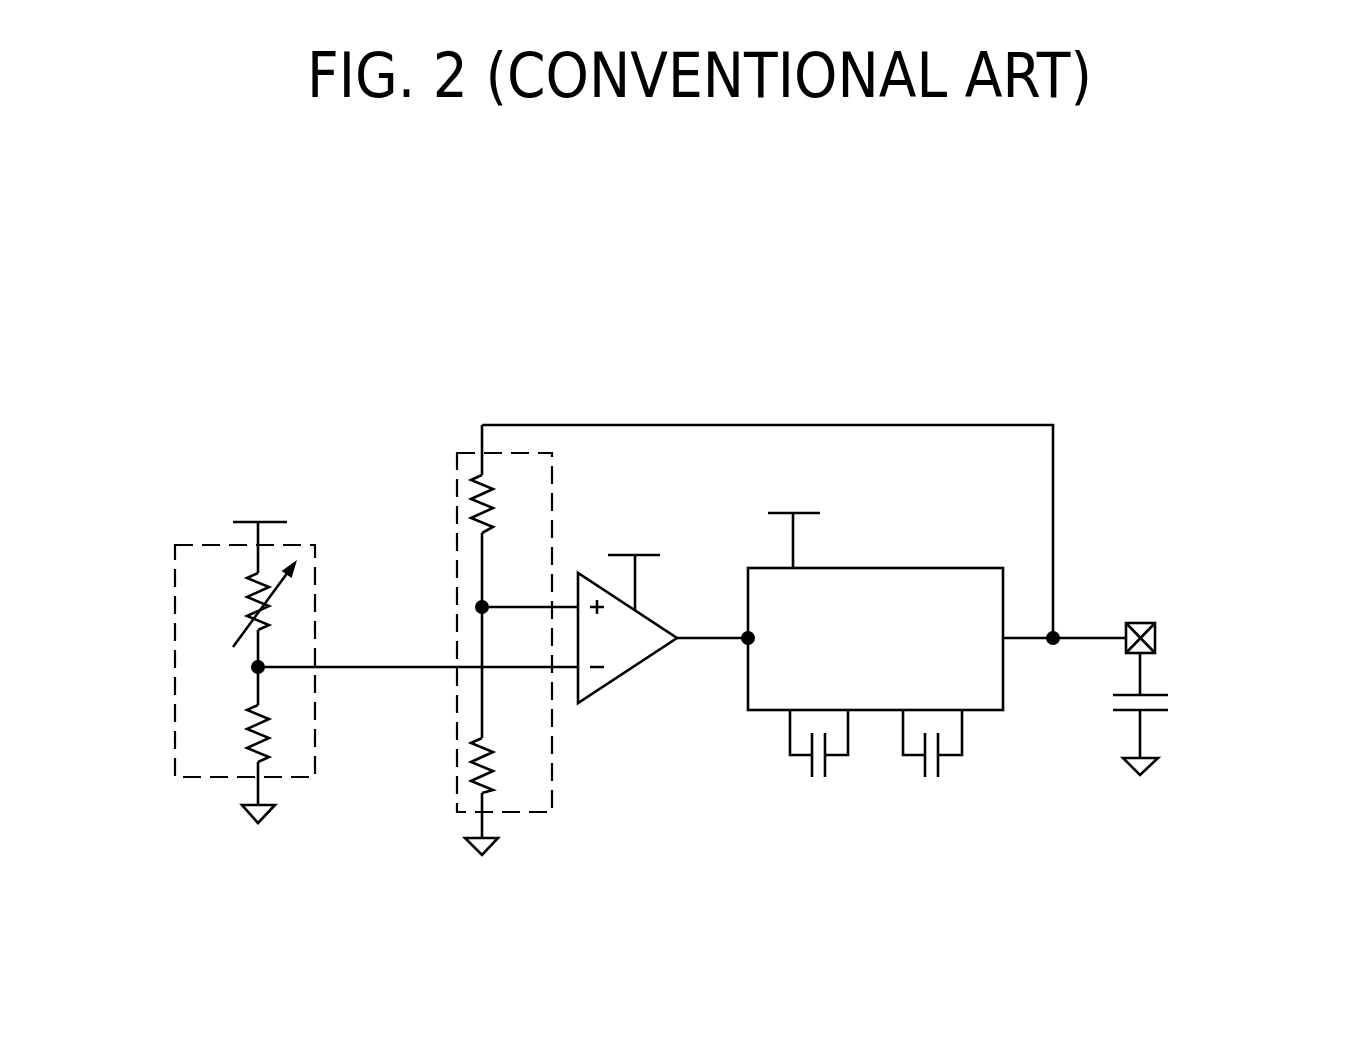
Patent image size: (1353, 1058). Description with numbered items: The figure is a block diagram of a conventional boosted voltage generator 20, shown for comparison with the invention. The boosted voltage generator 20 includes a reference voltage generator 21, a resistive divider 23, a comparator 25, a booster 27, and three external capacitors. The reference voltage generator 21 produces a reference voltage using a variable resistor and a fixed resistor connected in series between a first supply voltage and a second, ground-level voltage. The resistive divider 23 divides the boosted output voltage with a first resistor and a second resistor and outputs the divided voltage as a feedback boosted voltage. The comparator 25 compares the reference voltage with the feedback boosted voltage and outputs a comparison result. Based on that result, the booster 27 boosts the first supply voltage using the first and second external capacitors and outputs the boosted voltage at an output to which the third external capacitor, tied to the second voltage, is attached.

The boosted voltage generator 20 is at (1128, 332).
The reference voltage generator 21 is at (315, 563).
The resistive divider 23 is at (552, 490).
The comparator 25 is at (630, 675).
The booster 27 is at (953, 567).